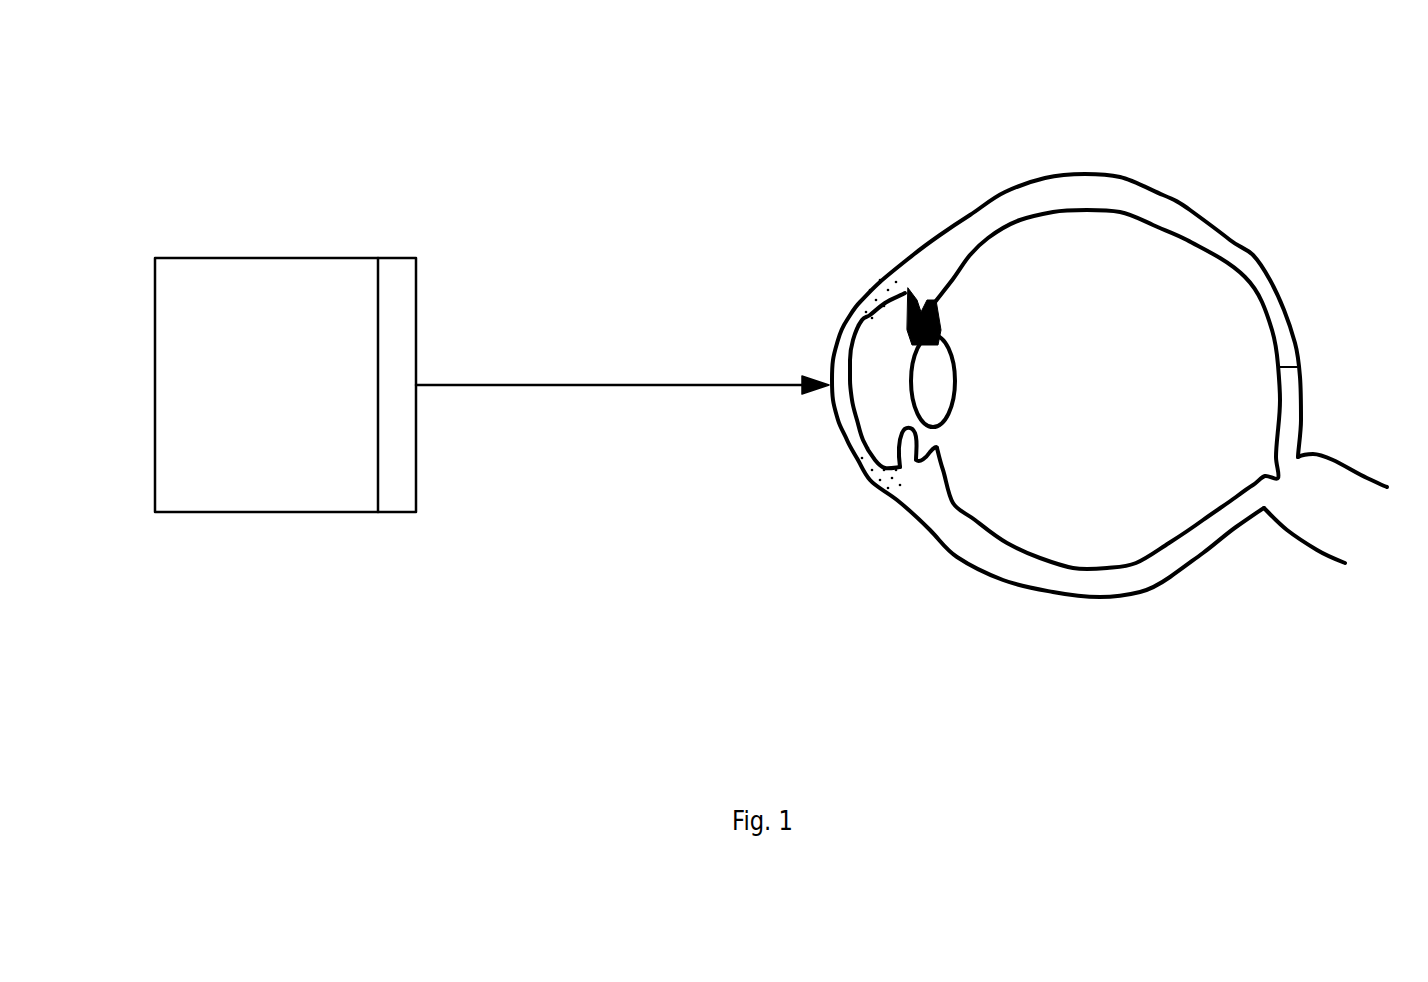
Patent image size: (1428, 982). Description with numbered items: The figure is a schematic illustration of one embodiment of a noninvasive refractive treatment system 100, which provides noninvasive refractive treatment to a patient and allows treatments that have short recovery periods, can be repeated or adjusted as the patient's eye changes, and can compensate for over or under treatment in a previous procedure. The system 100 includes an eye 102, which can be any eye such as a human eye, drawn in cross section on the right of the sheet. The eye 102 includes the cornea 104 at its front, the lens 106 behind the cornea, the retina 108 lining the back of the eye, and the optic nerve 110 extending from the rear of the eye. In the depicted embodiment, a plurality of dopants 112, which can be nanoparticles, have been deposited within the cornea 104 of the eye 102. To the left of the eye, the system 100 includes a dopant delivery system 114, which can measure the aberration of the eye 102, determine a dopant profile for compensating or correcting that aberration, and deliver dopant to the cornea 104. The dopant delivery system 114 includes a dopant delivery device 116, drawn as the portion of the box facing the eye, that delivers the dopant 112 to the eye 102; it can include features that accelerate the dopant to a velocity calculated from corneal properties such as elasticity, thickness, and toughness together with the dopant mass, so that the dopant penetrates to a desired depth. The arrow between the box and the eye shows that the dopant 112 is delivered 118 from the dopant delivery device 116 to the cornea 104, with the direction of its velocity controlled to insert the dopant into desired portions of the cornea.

The noninvasive refractive treatment system 100 is at (1302, 101).
The eye 102 is at (1025, 184).
The cornea 104 is at (840, 350).
The lens 106 is at (954, 420).
The retina 108 is at (1301, 362).
The optic nerve 110 is at (1301, 544).
The dopants 112 is at (866, 474).
The dopant delivery system 114 is at (179, 258).
The dopant delivery device 116 is at (417, 346).
The delivery of dopant 118 is at (649, 388).